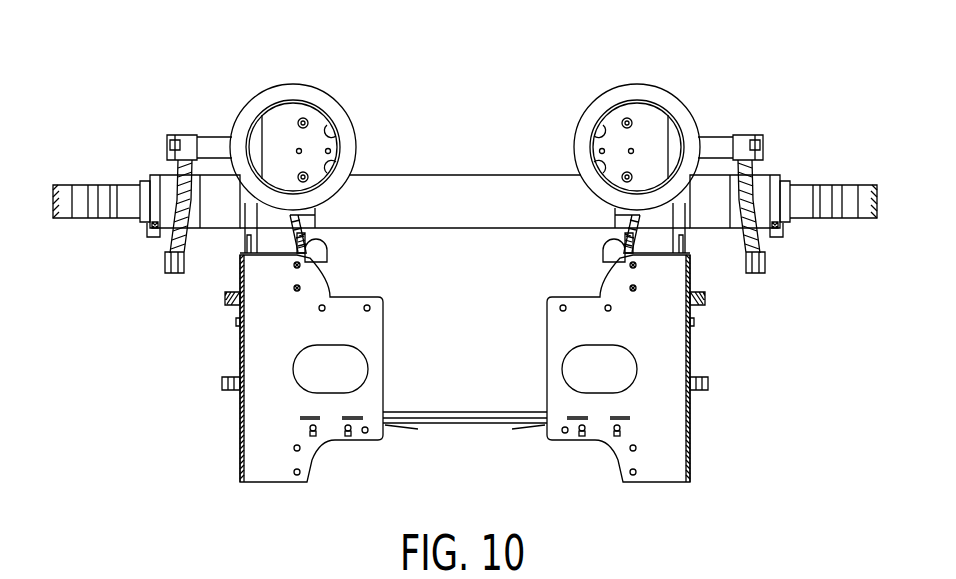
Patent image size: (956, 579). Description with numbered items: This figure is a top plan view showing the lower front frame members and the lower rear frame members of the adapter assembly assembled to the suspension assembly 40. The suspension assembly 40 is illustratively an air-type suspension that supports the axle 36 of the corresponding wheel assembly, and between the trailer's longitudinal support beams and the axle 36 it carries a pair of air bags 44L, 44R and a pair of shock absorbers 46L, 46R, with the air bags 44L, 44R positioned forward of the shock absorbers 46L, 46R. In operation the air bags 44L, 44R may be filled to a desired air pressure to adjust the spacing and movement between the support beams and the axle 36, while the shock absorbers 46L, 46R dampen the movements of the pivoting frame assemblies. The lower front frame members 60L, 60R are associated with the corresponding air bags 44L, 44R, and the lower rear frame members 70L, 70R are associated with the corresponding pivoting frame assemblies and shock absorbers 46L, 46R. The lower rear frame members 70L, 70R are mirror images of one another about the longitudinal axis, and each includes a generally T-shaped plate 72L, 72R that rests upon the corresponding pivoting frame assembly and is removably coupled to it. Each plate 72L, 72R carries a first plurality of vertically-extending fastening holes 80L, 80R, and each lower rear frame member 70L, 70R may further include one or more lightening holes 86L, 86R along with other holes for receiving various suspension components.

The axle 36 is at (476, 186).
The suspension assembly 40 is at (200, 485).
The air bag 44L is at (262, 100).
The air bag 44R is at (686, 118).
The lower front frame member 60L is at (294, 92).
The lower front frame member 60R is at (655, 100).
The shock absorber 46L is at (318, 252).
The shock absorber 46R is at (602, 257).
The lower rear frame member 70L is at (226, 424).
The lower rear frame member 70R is at (704, 428).
The T-shaped plate 72L is at (257, 355).
The T-shaped plate 72R is at (673, 358).
The vertically-extending fastening holes 80L is at (347, 452).
The vertically-extending fastening holes 80R is at (614, 452).
The lightening hole 86L is at (355, 368).
The lightening hole 86R is at (580, 370).